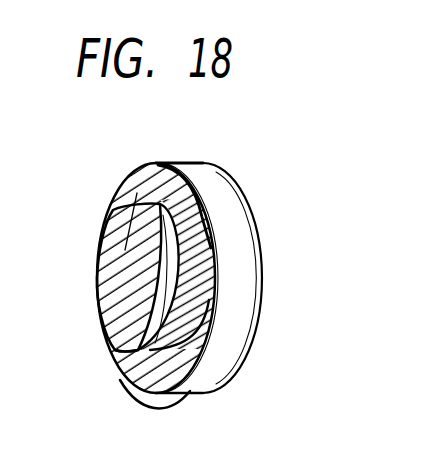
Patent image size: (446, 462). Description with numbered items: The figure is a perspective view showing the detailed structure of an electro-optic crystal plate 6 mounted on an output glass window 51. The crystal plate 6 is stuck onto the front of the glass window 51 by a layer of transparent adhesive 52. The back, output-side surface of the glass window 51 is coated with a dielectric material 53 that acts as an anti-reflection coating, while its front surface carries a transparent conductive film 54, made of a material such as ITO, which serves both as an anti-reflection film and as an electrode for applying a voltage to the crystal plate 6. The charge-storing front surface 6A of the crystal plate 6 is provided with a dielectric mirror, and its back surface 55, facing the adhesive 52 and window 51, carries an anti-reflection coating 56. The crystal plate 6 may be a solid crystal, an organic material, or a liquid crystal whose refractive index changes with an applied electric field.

The output glass window 51 is at (220, 357).
The transparent adhesive 52 is at (193, 197).
The dielectric material 53 is at (255, 228).
The transparent conductive film 54 is at (150, 380).
The back surface 55 is at (112, 218).
The charge-storing front surface 6A is at (89, 260).
The anti-reflection coating 56 is at (137, 193).
The electro-optic crystal plate 6 is at (128, 362).